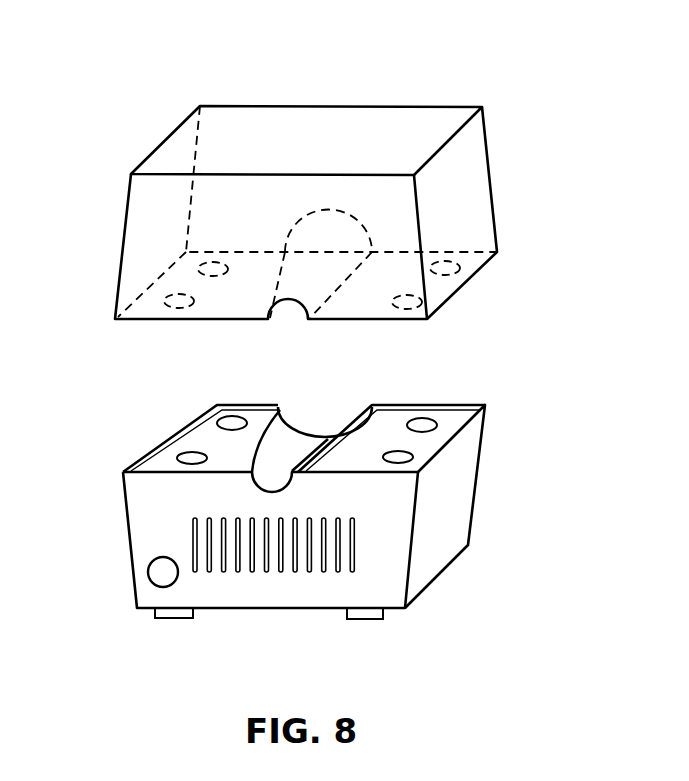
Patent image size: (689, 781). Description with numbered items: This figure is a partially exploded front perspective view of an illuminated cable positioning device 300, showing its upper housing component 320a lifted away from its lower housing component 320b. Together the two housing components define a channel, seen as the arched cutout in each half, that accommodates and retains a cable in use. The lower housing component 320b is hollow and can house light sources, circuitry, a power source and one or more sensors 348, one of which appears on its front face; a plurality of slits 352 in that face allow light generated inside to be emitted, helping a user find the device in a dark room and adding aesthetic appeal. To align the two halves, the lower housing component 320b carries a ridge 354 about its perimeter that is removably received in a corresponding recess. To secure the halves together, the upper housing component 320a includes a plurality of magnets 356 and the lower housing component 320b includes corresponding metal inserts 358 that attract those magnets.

The cable positioning device 300 is at (395, 58).
The upper housing component 320a is at (313, 212).
The lower housing component 320b is at (315, 517).
The magnets 356 is at (165, 300).
The metal inserts 358 is at (233, 418).
The ridge 354 is at (140, 465).
The sensor 348 is at (148, 572).
The slits 352 is at (263, 563).